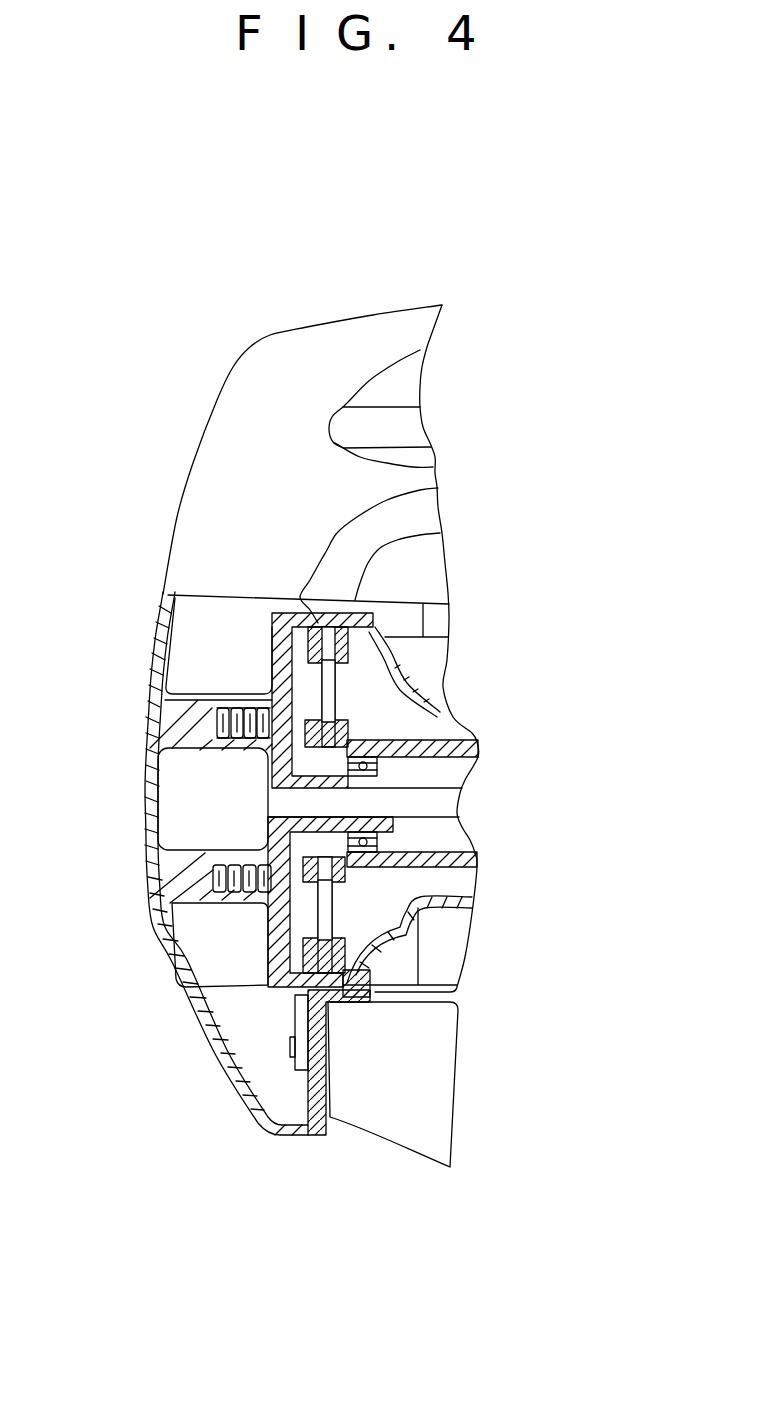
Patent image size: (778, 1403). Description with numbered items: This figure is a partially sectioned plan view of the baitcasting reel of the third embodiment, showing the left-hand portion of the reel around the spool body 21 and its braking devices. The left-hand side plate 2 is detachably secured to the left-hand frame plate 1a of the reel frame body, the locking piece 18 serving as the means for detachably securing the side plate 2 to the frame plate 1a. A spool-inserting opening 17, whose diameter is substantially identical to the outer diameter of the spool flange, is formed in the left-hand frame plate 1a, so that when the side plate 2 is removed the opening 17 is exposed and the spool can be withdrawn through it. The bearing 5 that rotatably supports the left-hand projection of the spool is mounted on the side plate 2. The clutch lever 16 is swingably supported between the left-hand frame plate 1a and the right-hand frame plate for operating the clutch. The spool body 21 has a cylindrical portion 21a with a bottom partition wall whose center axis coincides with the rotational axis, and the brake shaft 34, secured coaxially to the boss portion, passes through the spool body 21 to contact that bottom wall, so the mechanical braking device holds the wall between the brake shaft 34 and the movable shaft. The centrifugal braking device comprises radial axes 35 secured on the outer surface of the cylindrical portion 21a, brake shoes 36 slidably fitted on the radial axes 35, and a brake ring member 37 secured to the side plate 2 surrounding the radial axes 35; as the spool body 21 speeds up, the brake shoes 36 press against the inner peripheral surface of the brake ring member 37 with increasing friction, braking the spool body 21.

The left-hand side plate 2 is at (230, 1090).
The left-hand frame plate 1a is at (310, 1135).
The clutch lever 16 is at (397, 1130).
The locking piece 18 is at (297, 1010).
The spool-inserting opening 17 is at (353, 963).
The spool body 21 is at (447, 688).
The cylindrical portion 21a is at (470, 857).
The brake shaft 34 is at (443, 787).
The radial axes 35 is at (327, 682).
The brake shoes 36 is at (267, 617).
The brake ring member 37 is at (337, 603).
The bearing 5 is at (360, 855).